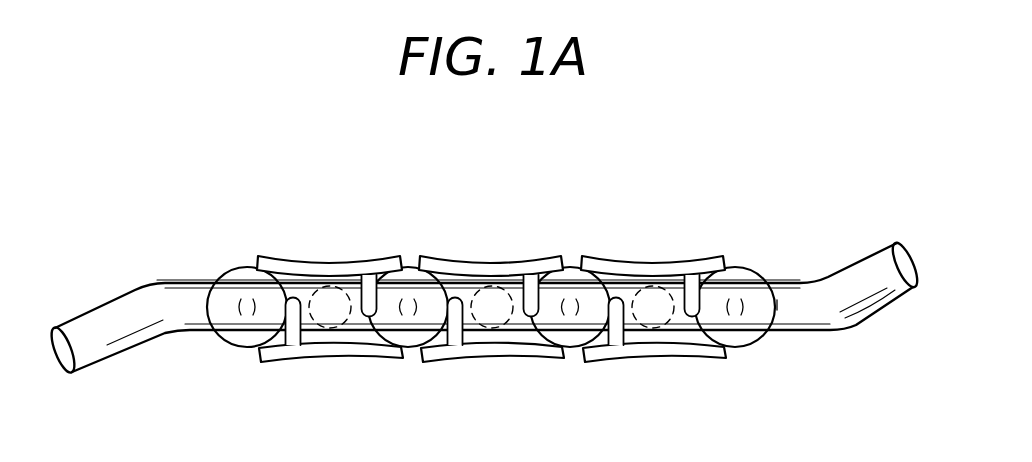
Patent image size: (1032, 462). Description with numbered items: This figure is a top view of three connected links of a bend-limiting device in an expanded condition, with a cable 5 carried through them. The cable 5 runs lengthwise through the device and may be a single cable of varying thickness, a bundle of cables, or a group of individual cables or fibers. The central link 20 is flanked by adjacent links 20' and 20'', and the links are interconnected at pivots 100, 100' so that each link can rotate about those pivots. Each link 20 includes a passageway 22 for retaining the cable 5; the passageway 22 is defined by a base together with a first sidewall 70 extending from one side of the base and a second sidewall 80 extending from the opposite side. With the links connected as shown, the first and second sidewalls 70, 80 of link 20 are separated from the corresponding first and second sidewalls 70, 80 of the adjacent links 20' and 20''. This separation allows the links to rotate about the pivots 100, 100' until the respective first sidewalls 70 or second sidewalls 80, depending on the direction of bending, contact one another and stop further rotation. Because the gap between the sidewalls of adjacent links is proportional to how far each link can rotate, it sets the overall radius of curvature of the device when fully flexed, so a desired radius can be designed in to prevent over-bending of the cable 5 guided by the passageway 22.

The cable 5 is at (877, 247).
The link 20 is at (522, 308).
The adjacent link 20' is at (350, 268).
The adjacent link 20'' is at (709, 265).
The passageway 22 is at (317, 248).
The first sidewall 70 is at (478, 258).
The second sidewall 80 is at (492, 357).
The pivot 100 is at (408, 353).
The pivot 100' is at (570, 353).